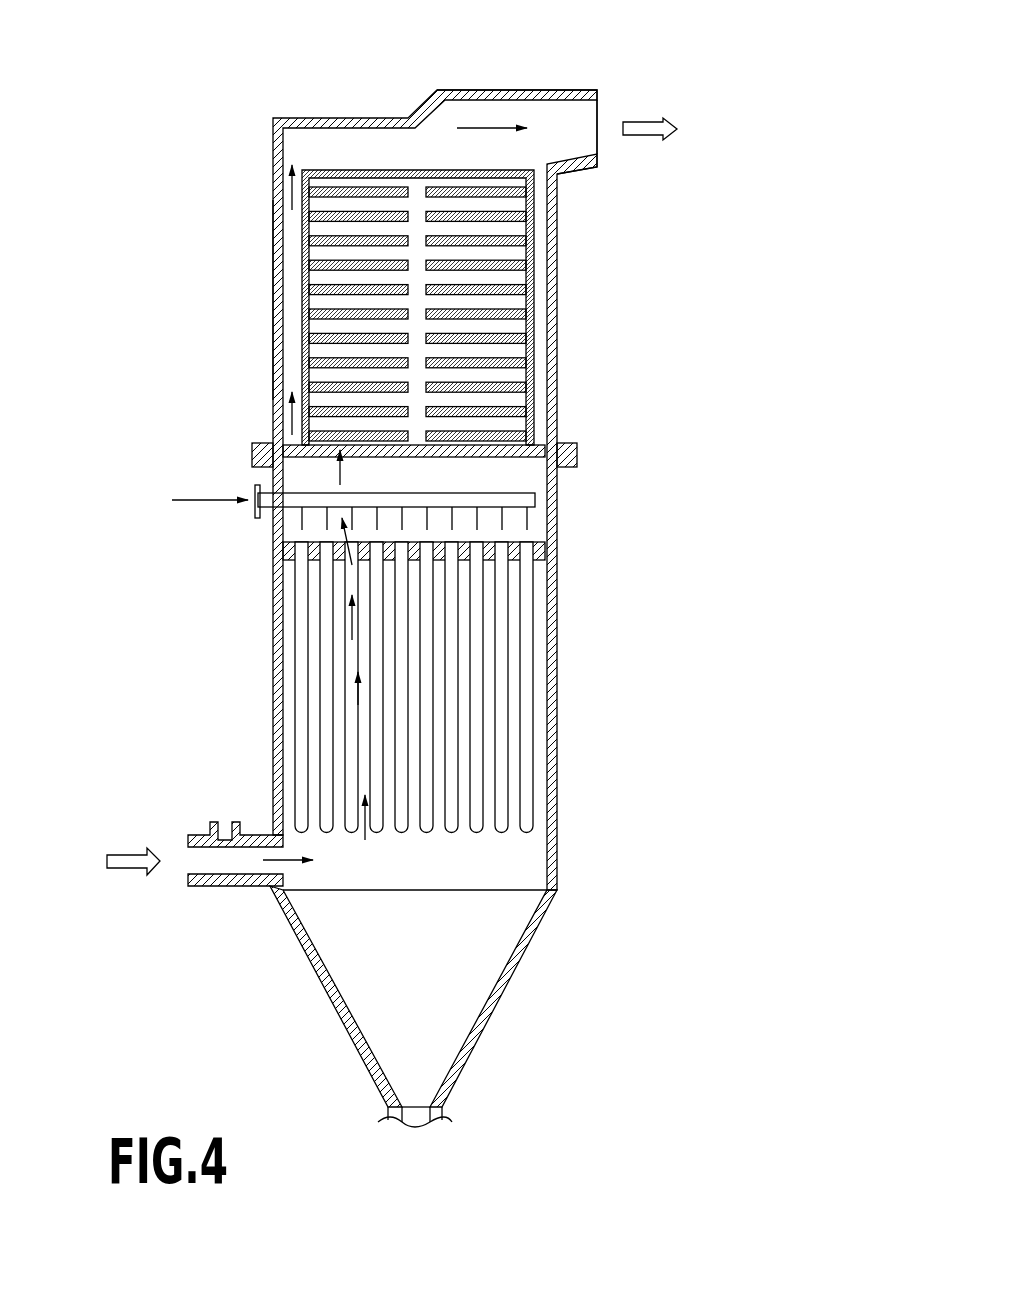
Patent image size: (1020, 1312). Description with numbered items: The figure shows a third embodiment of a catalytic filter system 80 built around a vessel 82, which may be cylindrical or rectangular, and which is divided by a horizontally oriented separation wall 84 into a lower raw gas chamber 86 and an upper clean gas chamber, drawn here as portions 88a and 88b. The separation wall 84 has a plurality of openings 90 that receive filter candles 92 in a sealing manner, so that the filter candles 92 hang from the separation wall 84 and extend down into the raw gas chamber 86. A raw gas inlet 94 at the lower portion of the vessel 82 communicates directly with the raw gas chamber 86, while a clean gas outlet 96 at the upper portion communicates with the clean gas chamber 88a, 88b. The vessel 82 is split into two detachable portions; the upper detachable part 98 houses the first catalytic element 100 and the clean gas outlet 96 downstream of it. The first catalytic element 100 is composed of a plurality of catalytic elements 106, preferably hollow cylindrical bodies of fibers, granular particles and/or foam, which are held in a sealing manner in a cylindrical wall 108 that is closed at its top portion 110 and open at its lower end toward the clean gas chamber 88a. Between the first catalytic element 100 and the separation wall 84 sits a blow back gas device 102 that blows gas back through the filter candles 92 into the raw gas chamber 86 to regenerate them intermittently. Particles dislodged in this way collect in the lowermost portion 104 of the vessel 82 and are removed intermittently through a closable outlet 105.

The catalytic filter system 80 is at (667, 373).
The vessel 82 is at (568, 615).
The separation wall 84 is at (547, 548).
The raw gas chamber 86 is at (490, 863).
The clean gas chamber portion 88a is at (497, 482).
The clean gas chamber portion 88b is at (300, 140).
The openings 90 is at (328, 537).
The filter candles 92 is at (530, 718).
The raw gas inlet 94 is at (235, 897).
The clean gas outlet 96 is at (560, 78).
The upper detachable part 98 is at (260, 298).
The first catalytic element 100 is at (543, 327).
The blow back gas device 102 is at (250, 475).
The lowermost portion 104 is at (487, 1022).
The closable outlet 105 is at (440, 1115).
The catalytic elements 106 is at (497, 189).
The cylindrical wall 108 is at (528, 230).
The top portion 110 is at (413, 170).